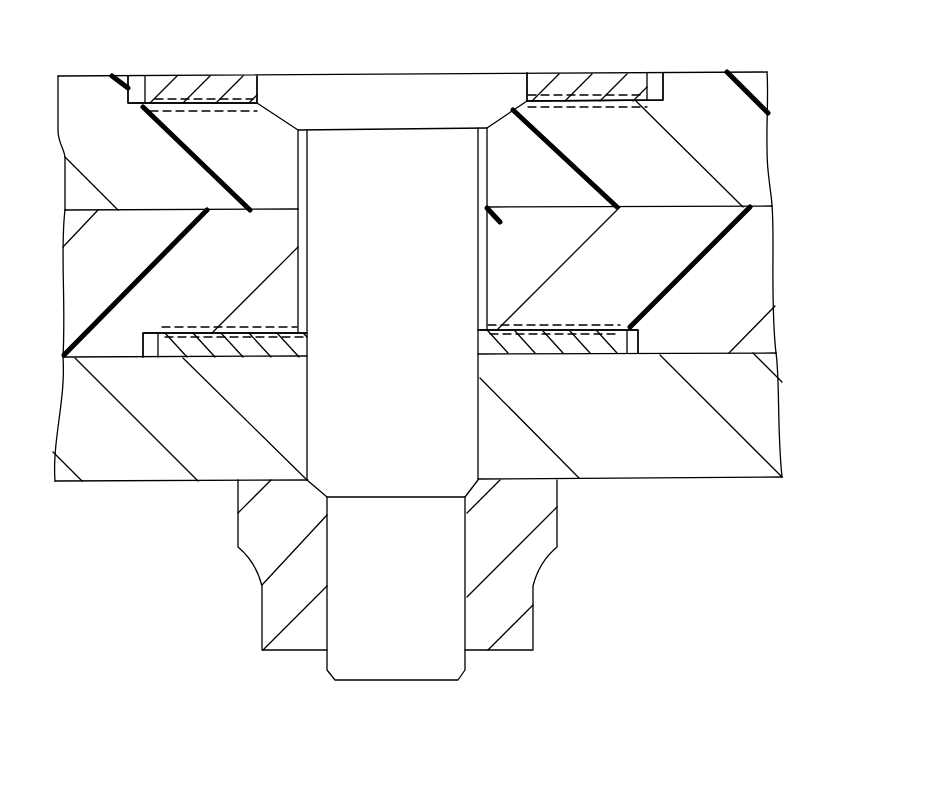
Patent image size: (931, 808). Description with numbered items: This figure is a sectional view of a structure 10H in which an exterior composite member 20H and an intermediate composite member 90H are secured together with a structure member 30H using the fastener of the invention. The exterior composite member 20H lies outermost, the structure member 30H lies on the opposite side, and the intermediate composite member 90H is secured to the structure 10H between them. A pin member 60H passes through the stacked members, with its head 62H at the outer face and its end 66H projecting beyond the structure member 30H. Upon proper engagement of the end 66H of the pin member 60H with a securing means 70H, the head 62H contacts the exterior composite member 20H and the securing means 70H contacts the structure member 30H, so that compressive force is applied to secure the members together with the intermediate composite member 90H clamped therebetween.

The structure 10H is at (729, 58).
The exterior composite member 20H is at (770, 147).
The intermediate composite member 90H is at (773, 272).
The structure member 30H is at (782, 426).
The pin member 60H is at (467, 73).
The head 62H is at (390, 188).
The end 66H is at (465, 668).
The securing means 70H is at (535, 628).